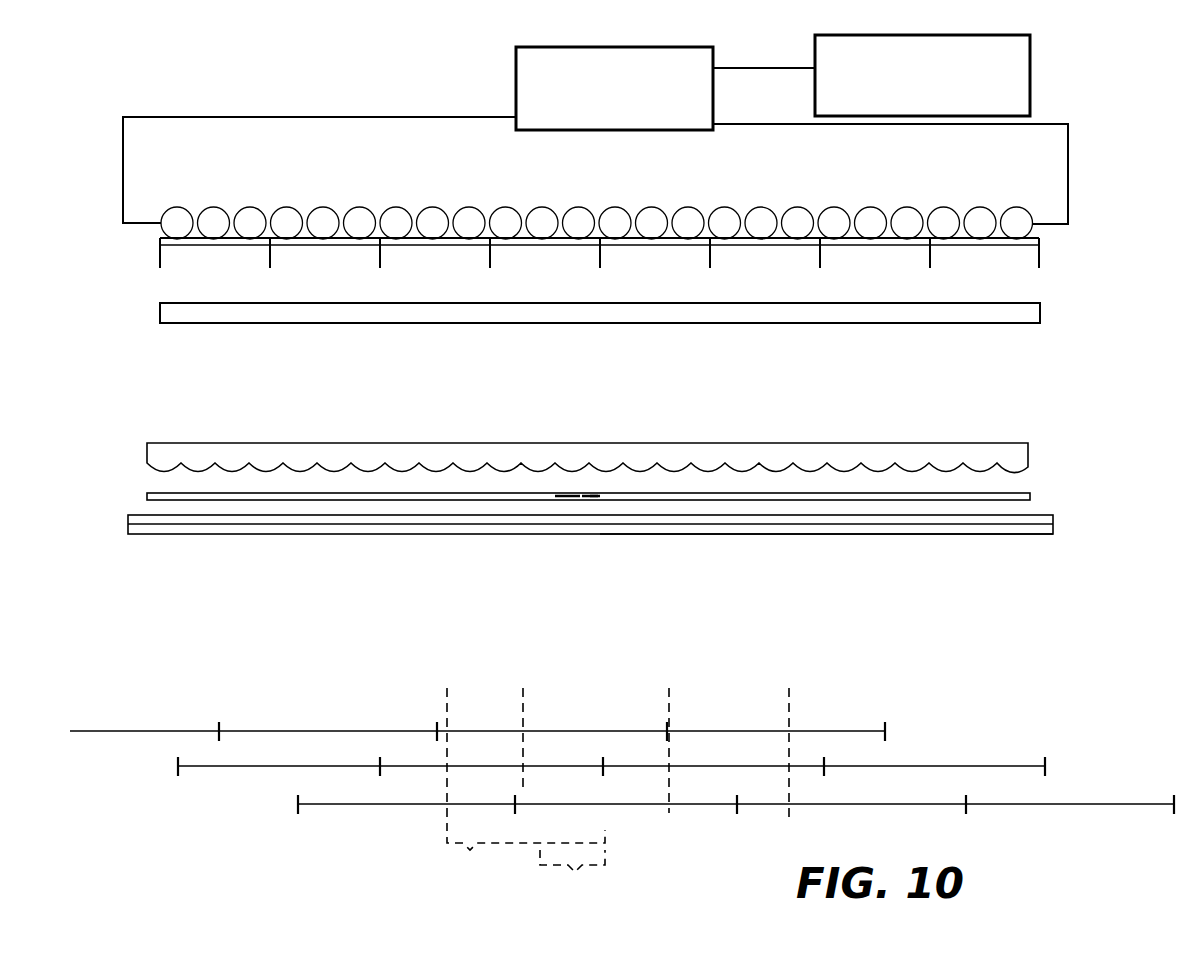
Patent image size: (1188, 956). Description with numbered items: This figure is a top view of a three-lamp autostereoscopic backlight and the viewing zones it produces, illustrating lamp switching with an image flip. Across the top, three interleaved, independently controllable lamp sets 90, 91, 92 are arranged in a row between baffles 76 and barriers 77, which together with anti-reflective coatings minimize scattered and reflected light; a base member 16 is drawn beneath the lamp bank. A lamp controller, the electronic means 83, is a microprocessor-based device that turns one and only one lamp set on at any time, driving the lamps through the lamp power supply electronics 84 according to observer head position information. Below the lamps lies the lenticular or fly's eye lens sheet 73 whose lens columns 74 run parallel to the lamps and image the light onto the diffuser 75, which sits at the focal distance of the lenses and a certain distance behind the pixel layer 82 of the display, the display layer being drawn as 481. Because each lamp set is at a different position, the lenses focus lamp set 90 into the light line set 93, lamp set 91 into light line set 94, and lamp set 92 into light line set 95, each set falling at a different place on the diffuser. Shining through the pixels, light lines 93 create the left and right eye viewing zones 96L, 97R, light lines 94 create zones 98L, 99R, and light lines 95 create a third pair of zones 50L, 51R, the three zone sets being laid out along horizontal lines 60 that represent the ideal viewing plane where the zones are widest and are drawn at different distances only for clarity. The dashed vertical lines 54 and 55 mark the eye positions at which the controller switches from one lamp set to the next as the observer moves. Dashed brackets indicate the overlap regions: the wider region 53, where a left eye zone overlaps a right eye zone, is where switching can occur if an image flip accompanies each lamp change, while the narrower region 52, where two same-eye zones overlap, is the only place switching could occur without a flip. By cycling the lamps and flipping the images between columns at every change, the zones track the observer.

The lamp power supply electronics 84 is at (516, 84).
The electronic means 83 is at (815, 90).
The lamp set 90 is at (214, 207).
The lamp set 91 is at (250, 207).
The lamp set 92 is at (177, 207).
The baffles 76 is at (160, 266).
The barriers 77 is at (214, 243).
The base plate 16 is at (1040, 313).
The lenticular lens sheet 73 is at (1028, 452).
The lenticular lenses 74 is at (1028, 477).
The diffuser 75 is at (1030, 497).
The pixel layer 82 is at (1053, 520).
The document 481 is at (1028, 534).
The light line set 95 is at (555, 495).
The light line set 94 is at (586, 495).
The light line set 93 is at (596, 495).
The left eye viewing zone 96L is at (368, 717).
The right eye viewing zone 97R is at (552, 717).
The left eye viewing zone 98L is at (501, 752).
The right eye viewing zone 99R is at (712, 752).
The scan segment 50L is at (632, 789).
The scan segment 51R is at (844, 789).
The scan line 60 is at (142, 733).
The boundary line 55 is at (566, 738).
The boundary line 54 is at (663, 736).
The overlap region 53 is at (526, 854).
The overlap region 52 is at (572, 877).